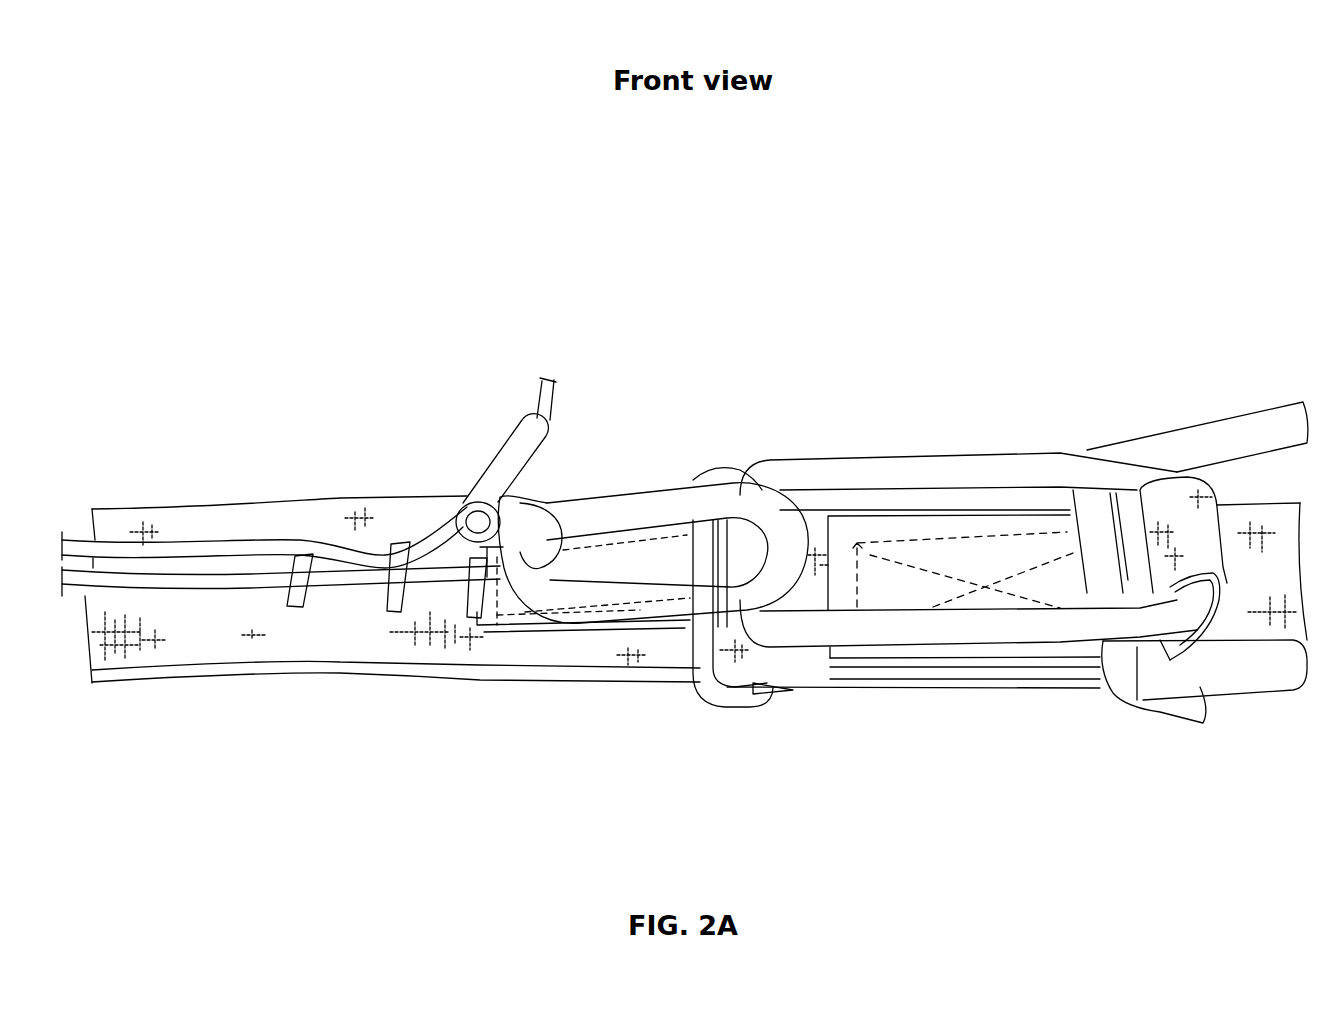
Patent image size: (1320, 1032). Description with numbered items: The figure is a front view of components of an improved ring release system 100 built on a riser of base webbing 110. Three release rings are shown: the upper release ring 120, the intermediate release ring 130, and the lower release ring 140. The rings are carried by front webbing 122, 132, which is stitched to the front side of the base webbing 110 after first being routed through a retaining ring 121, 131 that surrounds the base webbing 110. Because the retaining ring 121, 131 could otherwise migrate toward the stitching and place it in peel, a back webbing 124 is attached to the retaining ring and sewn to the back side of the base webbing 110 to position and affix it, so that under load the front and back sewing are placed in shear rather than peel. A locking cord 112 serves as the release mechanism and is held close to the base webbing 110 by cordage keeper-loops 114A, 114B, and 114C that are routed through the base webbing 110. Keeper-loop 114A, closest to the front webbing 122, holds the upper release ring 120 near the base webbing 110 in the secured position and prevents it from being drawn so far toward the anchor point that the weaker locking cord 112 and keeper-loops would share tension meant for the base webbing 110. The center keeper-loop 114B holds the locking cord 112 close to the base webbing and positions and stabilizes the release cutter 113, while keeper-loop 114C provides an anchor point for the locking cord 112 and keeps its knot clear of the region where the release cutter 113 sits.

The ring release system 100 is at (253, 97).
The base webbing 110 is at (228, 640).
The locking cord 112 is at (250, 540).
The release cutter 113 is at (515, 447).
The cordage keeper-loop 114A is at (477, 572).
The cordage keeper-loop 114B is at (397, 590).
The cordage keeper-loop 114C is at (301, 555).
The upper release ring 120 is at (650, 498).
The retaining ring 121 is at (720, 680).
The front webbing 122 is at (512, 613).
The back webbing 124 is at (792, 690).
The intermediate release ring 130 is at (945, 473).
The retaining ring 131 is at (1153, 650).
The front webbing 132 is at (923, 592).
The lower release ring 140 is at (1200, 447).